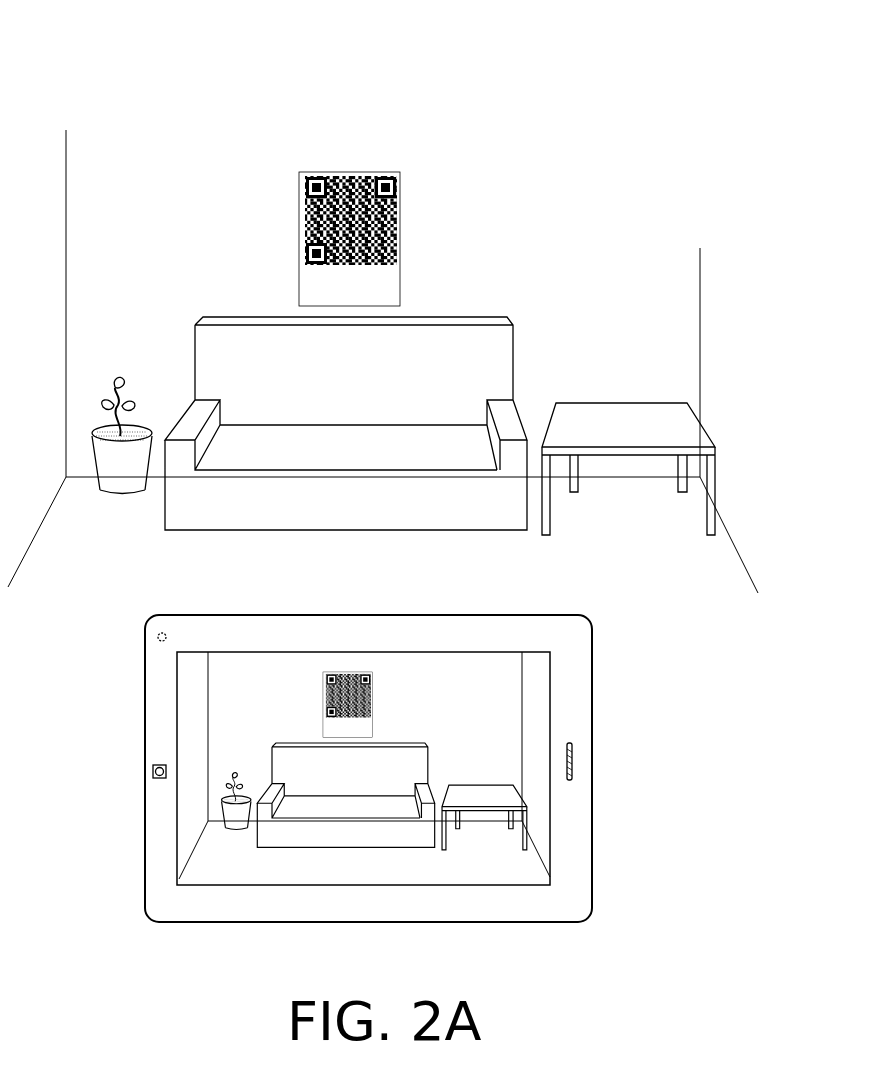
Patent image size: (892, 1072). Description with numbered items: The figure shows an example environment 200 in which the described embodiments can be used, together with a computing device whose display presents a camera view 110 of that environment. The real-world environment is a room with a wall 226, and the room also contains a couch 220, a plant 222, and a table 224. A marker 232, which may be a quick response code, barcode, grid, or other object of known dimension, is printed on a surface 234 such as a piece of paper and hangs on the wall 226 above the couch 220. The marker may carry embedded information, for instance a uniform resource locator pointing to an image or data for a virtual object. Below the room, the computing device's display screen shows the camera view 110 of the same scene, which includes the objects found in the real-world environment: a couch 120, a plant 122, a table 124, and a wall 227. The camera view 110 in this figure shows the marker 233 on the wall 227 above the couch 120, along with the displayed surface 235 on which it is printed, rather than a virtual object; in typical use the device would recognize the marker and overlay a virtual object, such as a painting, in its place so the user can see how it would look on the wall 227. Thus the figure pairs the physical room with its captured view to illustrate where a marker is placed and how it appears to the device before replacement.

The environment 200 is at (54, 86).
The wall 226 is at (470, 218).
The marker 232 is at (305, 220).
The surface 234 is at (299, 277).
The couch 220 is at (497, 315).
The table 224 is at (598, 403).
The plant 222 is at (107, 500).
The camera view 110 is at (493, 678).
The wall 227 is at (400, 706).
The marker 233 is at (330, 698).
The displayed poster 235 is at (330, 722).
The couch 120 is at (420, 740).
The table 124 is at (462, 785).
The plant 122 is at (235, 830).